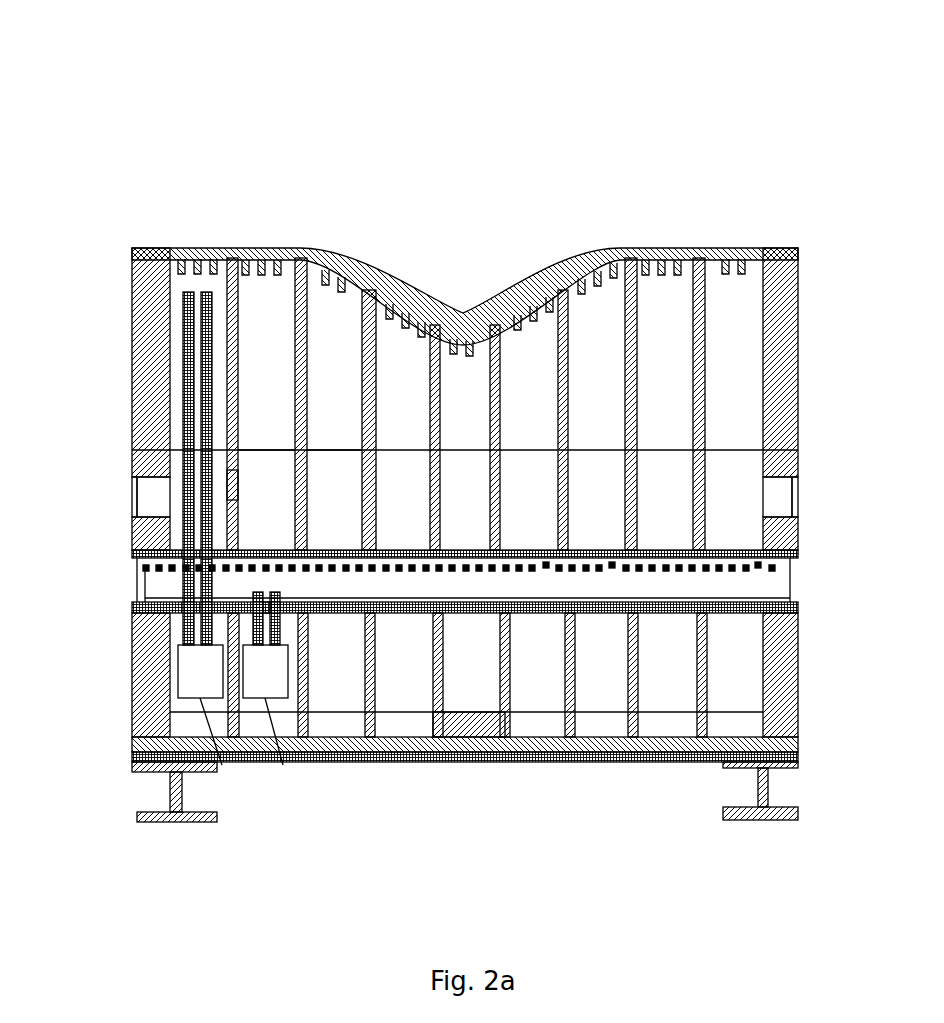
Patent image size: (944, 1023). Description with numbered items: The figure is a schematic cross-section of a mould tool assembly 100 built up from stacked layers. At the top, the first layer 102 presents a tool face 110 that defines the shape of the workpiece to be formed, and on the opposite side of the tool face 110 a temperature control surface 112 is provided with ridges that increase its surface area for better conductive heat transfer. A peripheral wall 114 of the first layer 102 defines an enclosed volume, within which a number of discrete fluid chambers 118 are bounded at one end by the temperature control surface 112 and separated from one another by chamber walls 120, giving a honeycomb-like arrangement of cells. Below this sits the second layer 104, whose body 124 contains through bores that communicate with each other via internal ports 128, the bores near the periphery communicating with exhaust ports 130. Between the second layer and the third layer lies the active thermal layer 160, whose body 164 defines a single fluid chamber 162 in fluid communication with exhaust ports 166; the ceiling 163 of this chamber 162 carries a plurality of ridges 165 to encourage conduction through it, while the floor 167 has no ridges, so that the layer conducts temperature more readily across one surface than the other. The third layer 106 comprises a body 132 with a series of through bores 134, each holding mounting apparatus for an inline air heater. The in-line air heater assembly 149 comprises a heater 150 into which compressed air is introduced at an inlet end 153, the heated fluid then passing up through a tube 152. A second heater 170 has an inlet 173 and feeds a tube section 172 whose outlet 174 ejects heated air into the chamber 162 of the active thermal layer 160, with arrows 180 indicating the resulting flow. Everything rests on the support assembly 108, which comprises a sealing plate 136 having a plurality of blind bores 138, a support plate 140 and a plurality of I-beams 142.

The mould tool assembly 100 is at (748, 88).
The first layer 102 is at (422, 399).
The second layer 104 is at (126, 461).
The third layer 106 is at (450, 675).
The support assembly 108 is at (110, 718).
The tool face 110 is at (465, 261).
The temperature control surface 112 is at (258, 285).
The peripheral wall 114 is at (130, 275).
The fluid chambers 118 is at (276, 382).
The chamber walls 120 is at (309, 367).
The body 124 is at (800, 455).
The internal ports 128 is at (366, 490).
The exhaust ports 130 is at (794, 492).
The body 132 is at (797, 663).
The through bores 134 is at (467, 675).
The sealing plate 136 is at (800, 735).
The blind bores 138 is at (466, 722).
The support plate 140 is at (800, 755).
The I-beams 142 is at (768, 780).
The in-line air heater assembly 149 is at (232, 485).
The heater 150 is at (200, 671).
The tube 152 is at (183, 408).
The inlet end 153 is at (222, 765).
The active thermal layer 160 is at (418, 580).
The fluid chamber 162 is at (504, 589).
The ceiling 163 is at (613, 560).
The body 164 is at (190, 292).
The ridges 165 is at (753, 567).
The exhaust ports 166 is at (132, 562).
The floor 167 is at (551, 567).
The heater 170 is at (265, 671).
The tube section 172 is at (295, 606).
The inlet 173 is at (283, 765).
The outlet 174 is at (266, 595).
The flow direction 180 is at (582, 493).